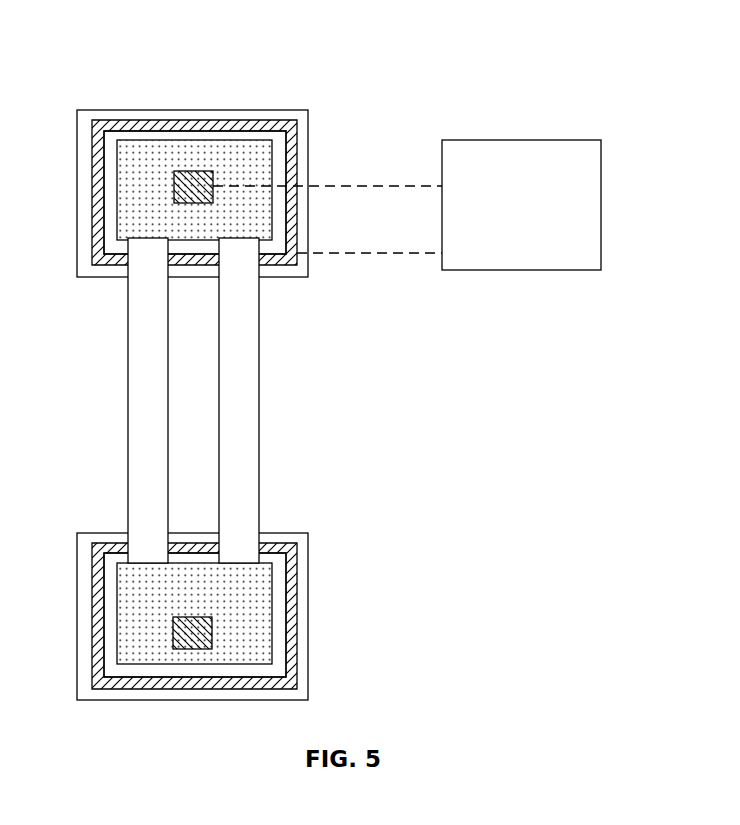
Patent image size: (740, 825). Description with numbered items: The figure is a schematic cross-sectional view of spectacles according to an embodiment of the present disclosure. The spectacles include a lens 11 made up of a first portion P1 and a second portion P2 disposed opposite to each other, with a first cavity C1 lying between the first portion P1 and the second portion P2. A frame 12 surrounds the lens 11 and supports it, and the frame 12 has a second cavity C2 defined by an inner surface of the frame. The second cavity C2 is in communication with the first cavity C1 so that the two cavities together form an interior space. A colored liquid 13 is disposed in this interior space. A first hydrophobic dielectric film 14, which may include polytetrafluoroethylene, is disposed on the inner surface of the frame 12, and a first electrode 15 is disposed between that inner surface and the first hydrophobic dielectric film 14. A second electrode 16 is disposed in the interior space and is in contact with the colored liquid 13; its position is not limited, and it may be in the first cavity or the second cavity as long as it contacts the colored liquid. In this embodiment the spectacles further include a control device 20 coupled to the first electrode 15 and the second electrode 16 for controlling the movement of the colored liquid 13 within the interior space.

The lens 11 is at (260, 312).
The frame 12 is at (304, 225).
The colored liquid 13 is at (132, 188).
The first hydrophobic dielectric film 14 is at (277, 163).
The first electrode 15 is at (288, 178).
The second electrode 16 is at (190, 187).
The control device 20 is at (580, 200).
The first portion P1 is at (142, 370).
The second portion P2 is at (247, 370).
The first cavity C1 is at (184, 479).
The second cavity C2 is at (243, 139).